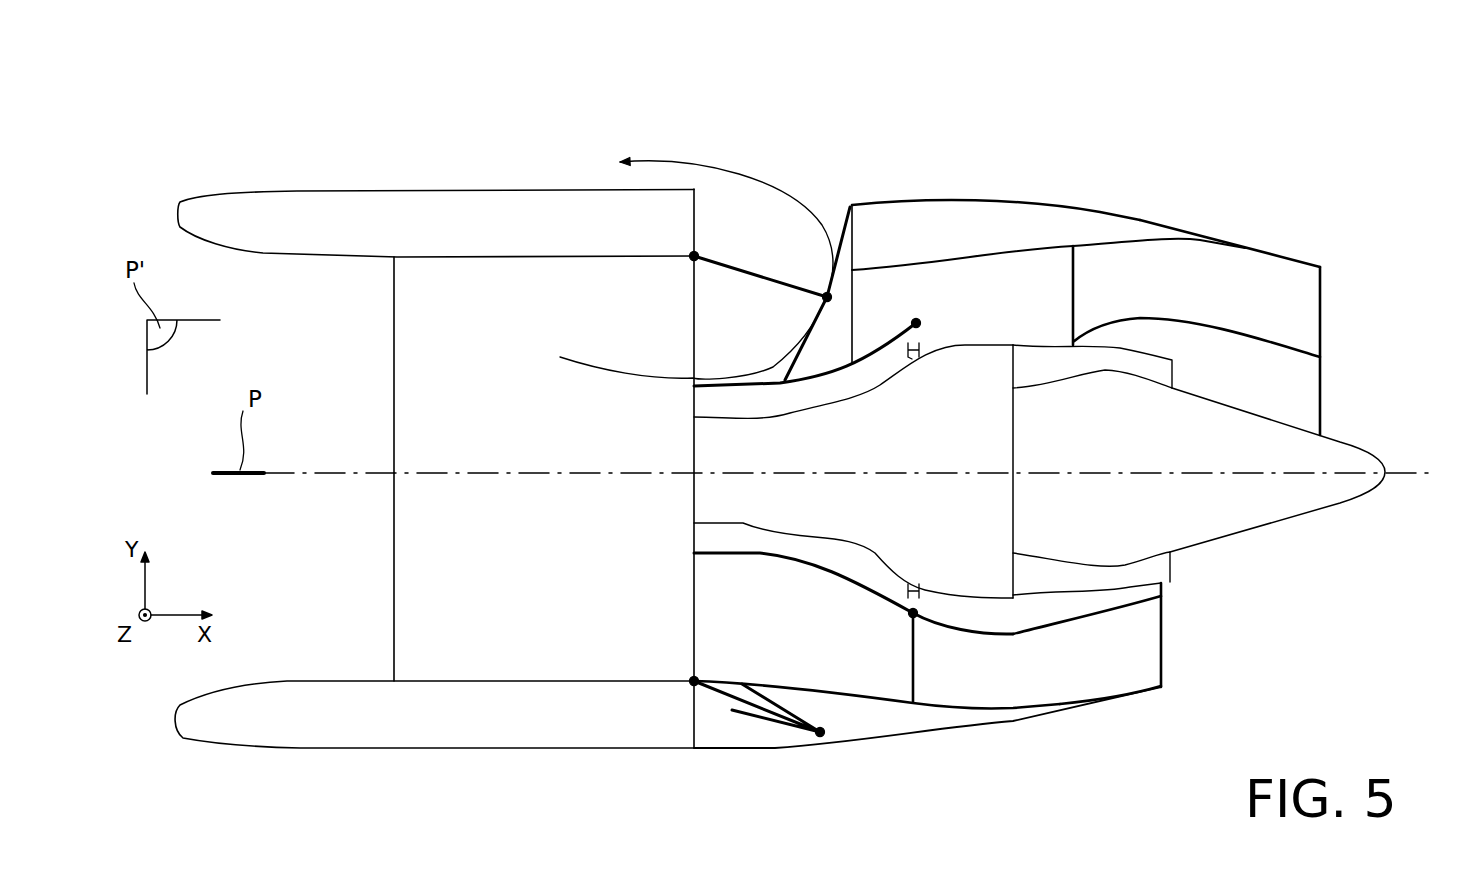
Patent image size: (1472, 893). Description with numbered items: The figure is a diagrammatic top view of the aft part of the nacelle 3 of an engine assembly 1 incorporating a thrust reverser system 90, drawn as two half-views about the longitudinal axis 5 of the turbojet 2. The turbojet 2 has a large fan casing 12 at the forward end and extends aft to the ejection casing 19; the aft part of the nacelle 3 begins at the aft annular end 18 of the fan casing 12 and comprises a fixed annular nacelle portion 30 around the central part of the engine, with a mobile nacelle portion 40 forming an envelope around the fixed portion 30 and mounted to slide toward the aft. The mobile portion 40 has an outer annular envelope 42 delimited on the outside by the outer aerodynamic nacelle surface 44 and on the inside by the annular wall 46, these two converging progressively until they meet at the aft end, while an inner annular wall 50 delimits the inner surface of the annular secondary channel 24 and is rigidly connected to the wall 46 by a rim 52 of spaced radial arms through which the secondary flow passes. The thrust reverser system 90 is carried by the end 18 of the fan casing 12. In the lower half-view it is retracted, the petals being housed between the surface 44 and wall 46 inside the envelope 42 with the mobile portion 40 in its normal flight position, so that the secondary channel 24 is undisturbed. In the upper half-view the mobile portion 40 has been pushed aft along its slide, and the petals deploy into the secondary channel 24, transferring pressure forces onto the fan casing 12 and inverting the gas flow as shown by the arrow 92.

The engine assembly 1 is at (452, 137).
The turbojet 2 is at (381, 394).
The nacelle 3 is at (238, 186).
The longitudinal axis 5 is at (1422, 472).
The fan casing 12 is at (415, 617).
The aft annular end of the fan casing 18 is at (693, 400).
The ejection casing 19 is at (982, 346).
The annular secondary channel 24 is at (738, 344).
The fixed annular nacelle portion 30 is at (828, 389).
The mobile nacelle portion 40 is at (1222, 229).
The outer annular envelope 42 is at (942, 248).
The outer aerodynamic nacelle surface 44 is at (975, 202).
The annular wall 46 is at (1057, 245).
The annular wall 50 is at (1300, 353).
The rim 52 is at (1075, 302).
The thrust reverser system 90 is at (847, 198).
The arrow 92 is at (695, 159).